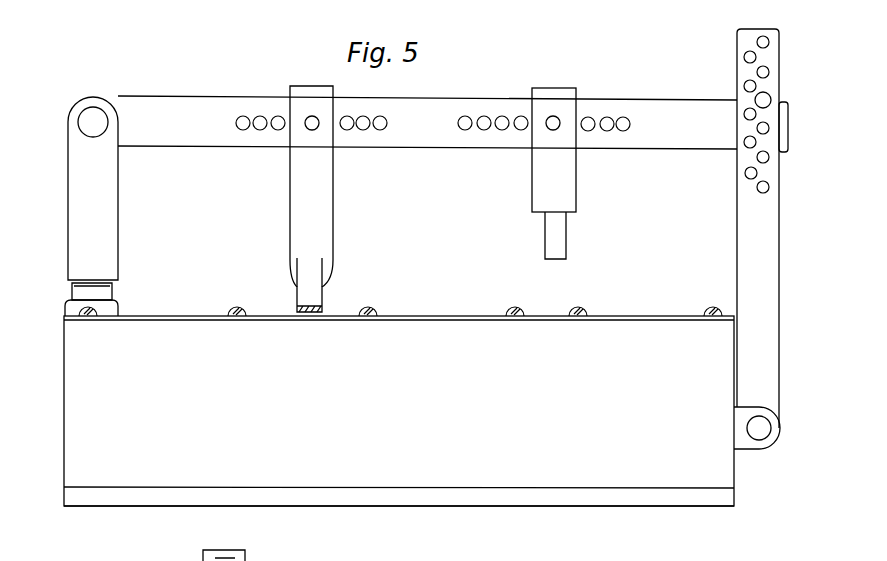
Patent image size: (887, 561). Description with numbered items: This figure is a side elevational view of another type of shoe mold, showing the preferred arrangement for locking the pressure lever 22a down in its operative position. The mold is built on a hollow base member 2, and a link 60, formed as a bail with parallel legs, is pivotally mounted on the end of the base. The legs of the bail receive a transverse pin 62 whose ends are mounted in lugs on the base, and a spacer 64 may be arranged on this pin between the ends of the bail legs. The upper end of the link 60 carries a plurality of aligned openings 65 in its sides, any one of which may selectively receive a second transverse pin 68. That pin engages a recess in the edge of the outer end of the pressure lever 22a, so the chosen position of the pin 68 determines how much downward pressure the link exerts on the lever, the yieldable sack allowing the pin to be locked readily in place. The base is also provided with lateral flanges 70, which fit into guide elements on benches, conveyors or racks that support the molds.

The base member 2 is at (80, 434).
The pressure lever 22a is at (415, 137).
The link 60 is at (750, 233).
The transverse pin 62 is at (759, 428).
The spacer 64 is at (781, 440).
The aligned openings 65 is at (770, 96).
The transverse pin 68 is at (762, 99).
The lateral flanges 70 is at (430, 495).